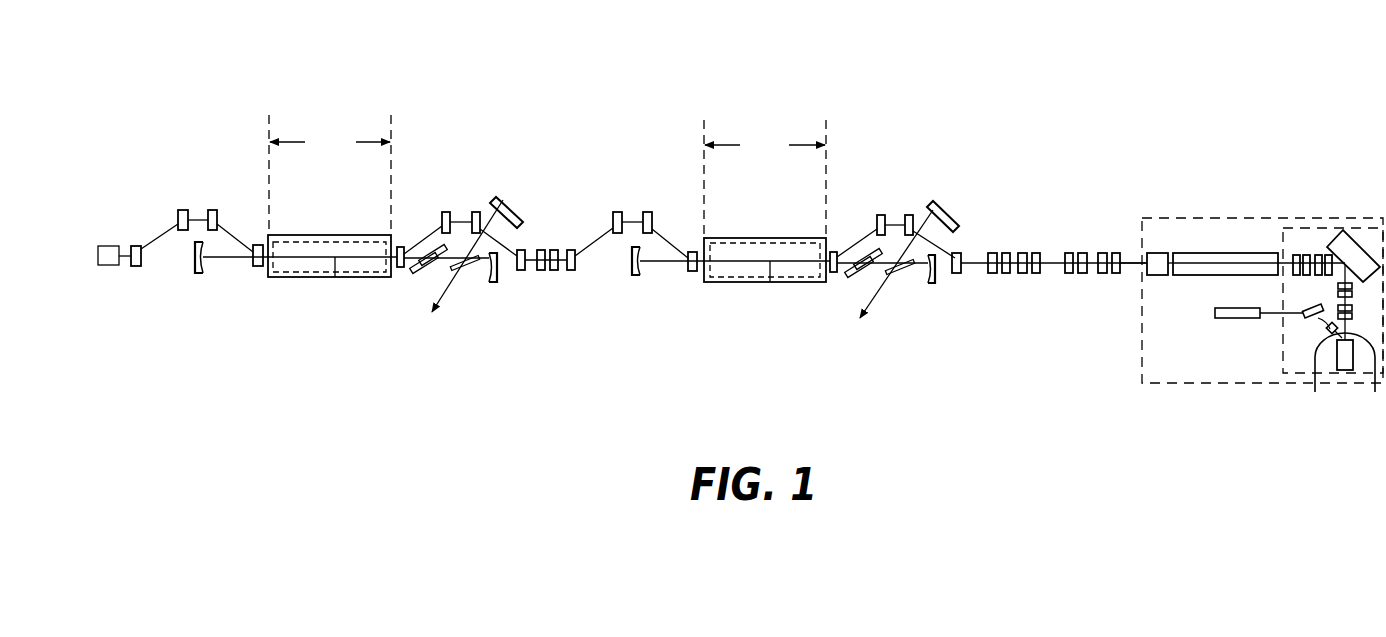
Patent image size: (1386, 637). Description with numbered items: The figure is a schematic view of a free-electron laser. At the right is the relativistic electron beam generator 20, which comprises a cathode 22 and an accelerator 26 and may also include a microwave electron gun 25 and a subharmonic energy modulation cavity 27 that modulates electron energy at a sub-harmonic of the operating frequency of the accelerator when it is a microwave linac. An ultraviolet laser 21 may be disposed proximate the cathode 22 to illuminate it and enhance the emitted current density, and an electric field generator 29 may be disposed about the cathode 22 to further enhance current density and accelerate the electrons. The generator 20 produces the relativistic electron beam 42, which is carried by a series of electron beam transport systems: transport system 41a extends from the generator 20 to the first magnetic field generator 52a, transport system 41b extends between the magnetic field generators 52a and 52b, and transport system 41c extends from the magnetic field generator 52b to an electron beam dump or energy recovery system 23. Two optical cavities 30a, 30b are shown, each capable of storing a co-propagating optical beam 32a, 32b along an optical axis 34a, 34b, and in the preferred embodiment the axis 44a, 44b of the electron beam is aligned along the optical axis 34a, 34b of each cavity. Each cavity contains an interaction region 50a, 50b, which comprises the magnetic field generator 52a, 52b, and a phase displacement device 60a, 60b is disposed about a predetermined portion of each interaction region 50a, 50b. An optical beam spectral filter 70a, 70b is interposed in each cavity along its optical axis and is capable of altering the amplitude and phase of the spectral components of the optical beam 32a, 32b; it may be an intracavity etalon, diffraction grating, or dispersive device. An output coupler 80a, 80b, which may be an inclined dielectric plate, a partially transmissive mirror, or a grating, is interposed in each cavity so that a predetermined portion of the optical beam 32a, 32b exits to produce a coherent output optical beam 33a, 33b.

The relativistic electron beam generator 20 is at (1247, 218).
The ultraviolet laser 21 is at (1227, 320).
The cathode 22 is at (1318, 336).
The electron beam dump or energy recovery system 23 is at (108, 266).
The microwave electron gun 25 is at (1328, 228).
The accelerator 26 is at (1202, 253).
The subharmonic energy modulation cavity 27 is at (1160, 253).
The electric field generator 29 is at (1375, 392).
The optical cavity 30a is at (933, 355).
The optical cavity 30b is at (498, 350).
The co-propagating optical beam 32a is at (717, 263).
The co-propagating optical beam 32b is at (283, 263).
The coherent output optical beam 33a is at (882, 281).
The coherent output optical beam 33b is at (449, 273).
The optical axis 34a is at (662, 262).
The optical axis 34b is at (227, 258).
The electron beam transport system 41a is at (913, 208).
The electron beam transport system 41b is at (477, 203).
The electron beam transport system 41c is at (262, 203).
The relativistic electron beam 42 is at (1130, 265).
The axis of relativistic electron beam 44a is at (770, 282).
The axis of relativistic electron beam 44b is at (335, 277).
The interaction region 50a is at (765, 179).
The interaction region 50b is at (330, 175).
The magnetic field generator 52a is at (733, 243).
The magnetic field generator 52b is at (300, 242).
The phase displacement device 60a is at (785, 238).
The phase displacement device 60b is at (350, 235).
The optical beam spectral filter 70a is at (863, 278).
The optical beam spectral filter 70b is at (427, 274).
The output coupler 80a is at (900, 273).
The output coupler 80b is at (467, 270).